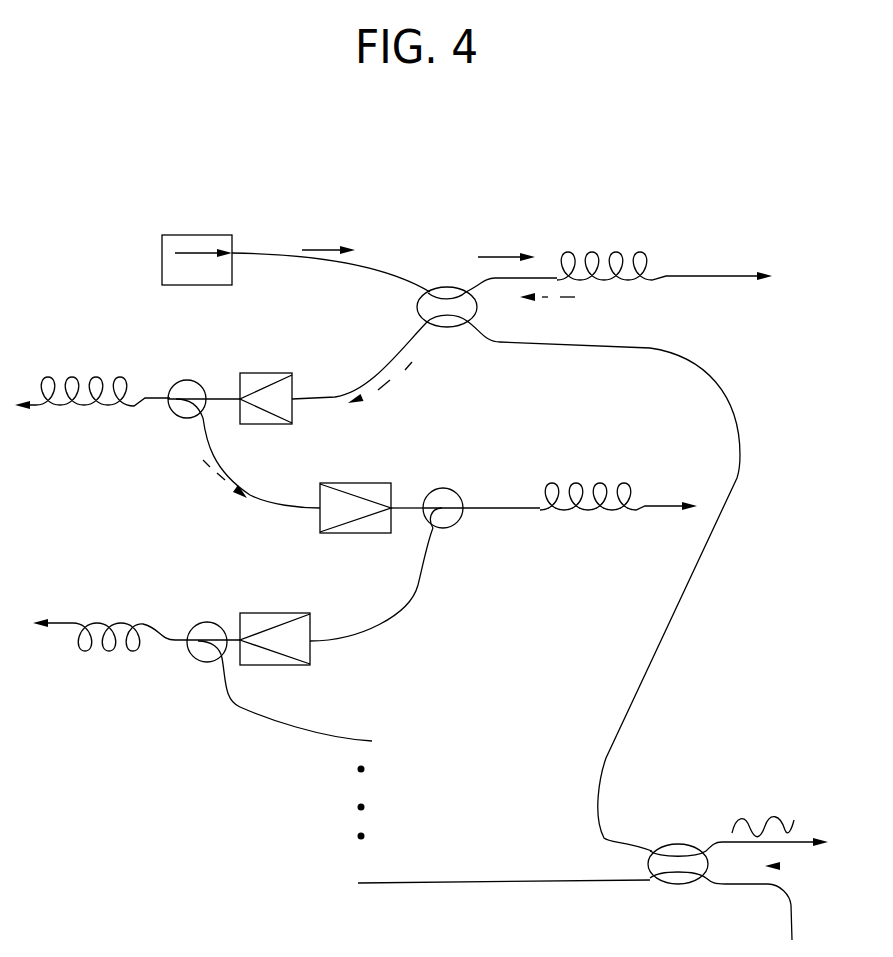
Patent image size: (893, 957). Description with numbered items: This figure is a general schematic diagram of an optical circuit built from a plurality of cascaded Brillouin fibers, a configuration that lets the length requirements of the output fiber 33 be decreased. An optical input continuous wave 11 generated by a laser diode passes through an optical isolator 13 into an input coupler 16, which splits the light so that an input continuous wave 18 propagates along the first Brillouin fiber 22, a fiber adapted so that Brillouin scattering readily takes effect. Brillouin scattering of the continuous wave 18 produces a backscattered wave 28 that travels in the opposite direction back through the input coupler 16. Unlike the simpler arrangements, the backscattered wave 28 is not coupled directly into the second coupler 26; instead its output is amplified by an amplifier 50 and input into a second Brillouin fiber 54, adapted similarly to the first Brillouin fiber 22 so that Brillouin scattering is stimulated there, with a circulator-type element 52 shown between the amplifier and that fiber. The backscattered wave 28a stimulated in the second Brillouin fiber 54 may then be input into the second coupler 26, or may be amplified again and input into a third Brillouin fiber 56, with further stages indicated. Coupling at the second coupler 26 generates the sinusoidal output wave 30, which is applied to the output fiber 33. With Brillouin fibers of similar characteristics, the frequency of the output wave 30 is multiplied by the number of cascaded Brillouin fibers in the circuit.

The optical isolator 13 is at (183, 235).
The optical input continuous wave 11 is at (318, 247).
The input coupler 16 is at (438, 290).
The input continuous wave 18 is at (495, 258).
The Brillouin fiber 22 is at (647, 262).
The backscattered wave 28 is at (553, 298).
The backscattered wave 28a is at (213, 470).
The second Brillouin fiber 54 is at (97, 378).
The optical circulator 52 is at (185, 377).
The amplifier 50 is at (265, 373).
The third Brillouin fiber 56 is at (455, 492).
The second coupler 26 is at (678, 843).
The sinusoidal output wave 30 is at (767, 817).
The output fiber 33 is at (778, 866).